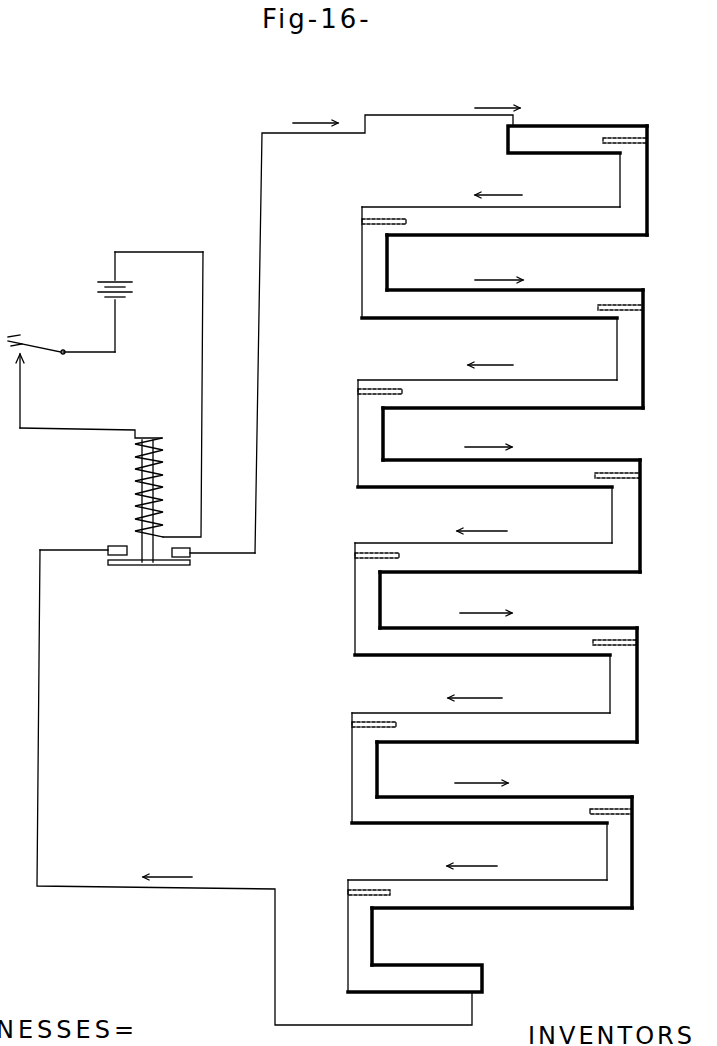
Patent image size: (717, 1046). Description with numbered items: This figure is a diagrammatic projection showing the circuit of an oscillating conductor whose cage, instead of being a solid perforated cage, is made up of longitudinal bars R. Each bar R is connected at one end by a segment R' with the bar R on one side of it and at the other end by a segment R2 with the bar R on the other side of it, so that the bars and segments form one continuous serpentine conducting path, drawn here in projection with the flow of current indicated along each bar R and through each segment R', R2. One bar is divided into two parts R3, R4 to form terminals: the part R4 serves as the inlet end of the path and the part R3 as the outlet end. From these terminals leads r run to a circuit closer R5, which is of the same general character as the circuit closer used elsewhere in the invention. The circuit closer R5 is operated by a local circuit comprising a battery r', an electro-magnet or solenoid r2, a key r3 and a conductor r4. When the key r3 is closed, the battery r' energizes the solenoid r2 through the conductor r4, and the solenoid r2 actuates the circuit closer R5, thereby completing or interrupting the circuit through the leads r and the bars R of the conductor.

The longitudinal bar R is at (497, 550).
The segment R' is at (639, 517).
The segment R2 is at (349, 599).
The bar part R3 is at (415, 978).
The bar part R4 is at (577, 126).
The circuit closer R5 is at (147, 568).
The lead r is at (278, 565).
The battery r' is at (150, 302).
The electro-magnet or solenoid r2 is at (135, 500).
The key r3 is at (85, 380).
The conductor r4 is at (192, 394).